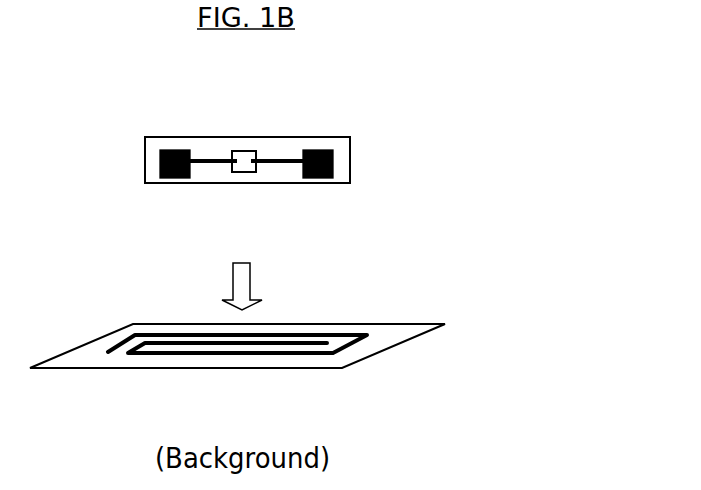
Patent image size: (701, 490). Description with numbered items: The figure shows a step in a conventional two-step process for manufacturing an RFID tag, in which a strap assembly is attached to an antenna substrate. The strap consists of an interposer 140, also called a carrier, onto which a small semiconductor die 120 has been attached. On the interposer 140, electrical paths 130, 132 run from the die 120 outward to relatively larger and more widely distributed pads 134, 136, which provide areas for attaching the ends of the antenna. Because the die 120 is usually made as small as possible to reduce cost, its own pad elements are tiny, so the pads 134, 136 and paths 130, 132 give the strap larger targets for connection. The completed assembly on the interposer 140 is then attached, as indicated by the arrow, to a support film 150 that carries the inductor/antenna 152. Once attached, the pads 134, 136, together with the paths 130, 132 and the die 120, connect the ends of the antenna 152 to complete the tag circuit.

The die 120 is at (240, 151).
The electrical path 130 is at (212, 164).
The electrical path 132 is at (275, 164).
The pad 134 is at (176, 150).
The pad 136 is at (323, 150).
The interposer 140 is at (172, 183).
The support film 150 is at (378, 353).
The inductor/antenna 152 is at (353, 335).